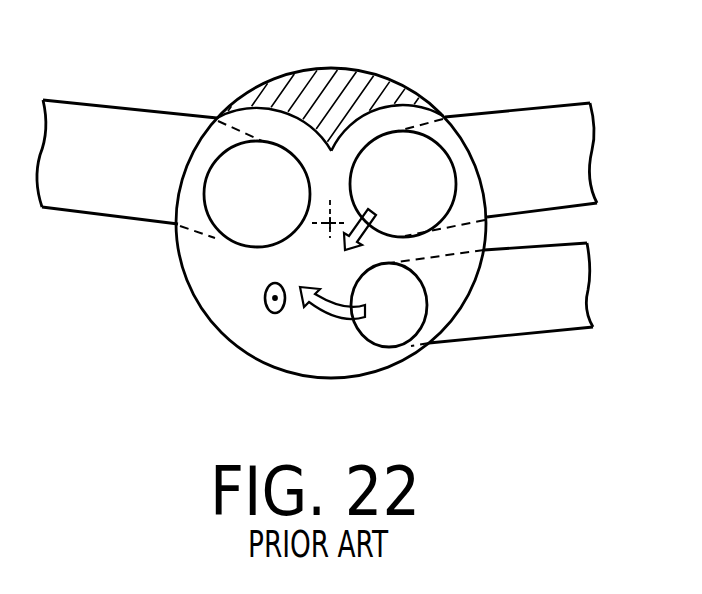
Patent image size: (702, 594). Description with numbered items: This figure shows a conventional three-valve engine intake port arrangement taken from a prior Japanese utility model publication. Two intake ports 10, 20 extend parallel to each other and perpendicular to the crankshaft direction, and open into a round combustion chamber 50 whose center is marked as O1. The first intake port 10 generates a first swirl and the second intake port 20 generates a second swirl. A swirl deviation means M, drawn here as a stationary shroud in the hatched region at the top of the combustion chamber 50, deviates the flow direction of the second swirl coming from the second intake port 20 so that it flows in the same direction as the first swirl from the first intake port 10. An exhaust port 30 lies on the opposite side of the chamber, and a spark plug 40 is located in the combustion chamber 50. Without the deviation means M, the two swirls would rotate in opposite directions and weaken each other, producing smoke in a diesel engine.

The first intake port 10 is at (506, 315).
The second intake port 20 is at (538, 130).
The exhaust port 30 is at (112, 126).
The spark plug 40 is at (264, 300).
The combustion chamber 50 is at (277, 350).
The swirl deviation means M is at (385, 30).
The center of the combustion chamber O1 is at (330, 218).